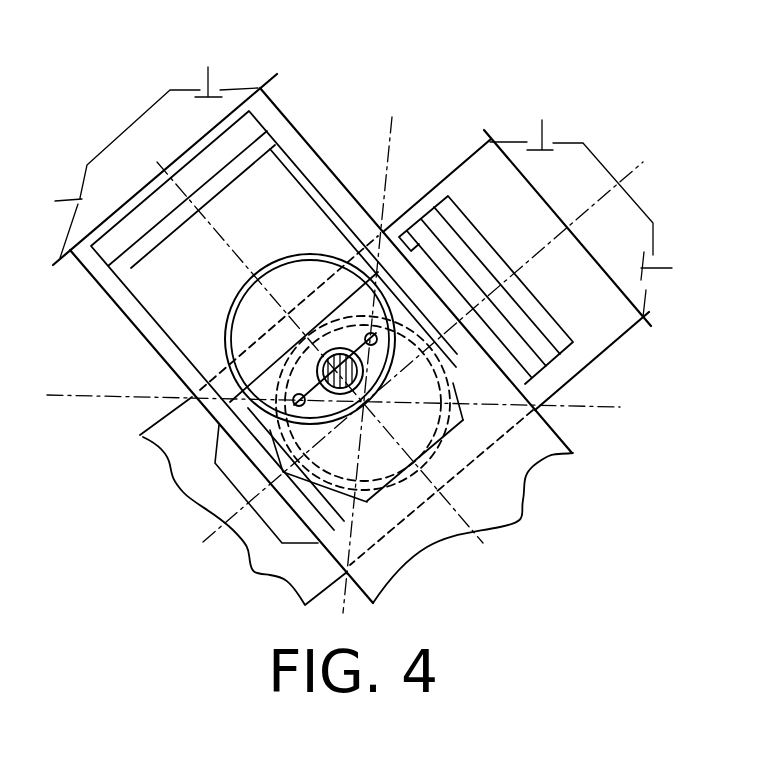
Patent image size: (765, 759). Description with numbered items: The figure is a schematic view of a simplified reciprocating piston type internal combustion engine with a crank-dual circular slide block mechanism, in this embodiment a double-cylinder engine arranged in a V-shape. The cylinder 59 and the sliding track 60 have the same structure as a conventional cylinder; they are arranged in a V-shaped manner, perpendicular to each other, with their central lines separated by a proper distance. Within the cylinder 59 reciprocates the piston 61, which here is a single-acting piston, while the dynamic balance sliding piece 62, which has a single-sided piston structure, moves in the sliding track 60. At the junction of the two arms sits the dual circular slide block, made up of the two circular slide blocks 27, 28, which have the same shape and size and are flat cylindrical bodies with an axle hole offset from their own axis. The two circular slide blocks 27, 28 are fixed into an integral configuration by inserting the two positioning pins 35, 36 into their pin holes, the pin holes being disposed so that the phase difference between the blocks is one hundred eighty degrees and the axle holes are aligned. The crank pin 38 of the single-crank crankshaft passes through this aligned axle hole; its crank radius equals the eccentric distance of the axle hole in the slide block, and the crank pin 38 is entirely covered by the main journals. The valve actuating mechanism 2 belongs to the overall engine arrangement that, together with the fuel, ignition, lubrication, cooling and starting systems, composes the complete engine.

The valve actuating mechanism 2 is at (207, 82).
The circular slide block 27 is at (437, 447).
The circular slide block 28 is at (283, 262).
The positioning pin 35 is at (294, 397).
The positioning pin 36 is at (364, 340).
The crank pin 38 is at (324, 356).
The cylinder 59 is at (565, 350).
The sliding track 60 is at (150, 333).
The piston 61 is at (557, 387).
The dynamic balance sliding piece 62 is at (102, 258).